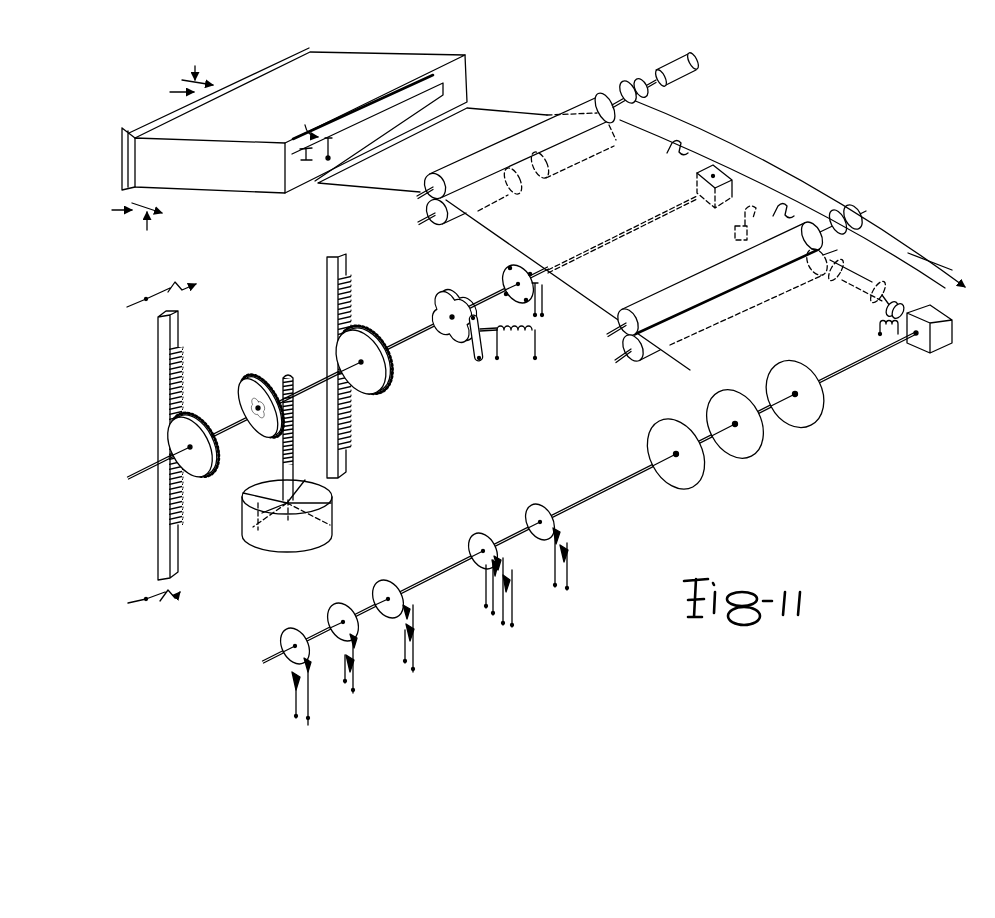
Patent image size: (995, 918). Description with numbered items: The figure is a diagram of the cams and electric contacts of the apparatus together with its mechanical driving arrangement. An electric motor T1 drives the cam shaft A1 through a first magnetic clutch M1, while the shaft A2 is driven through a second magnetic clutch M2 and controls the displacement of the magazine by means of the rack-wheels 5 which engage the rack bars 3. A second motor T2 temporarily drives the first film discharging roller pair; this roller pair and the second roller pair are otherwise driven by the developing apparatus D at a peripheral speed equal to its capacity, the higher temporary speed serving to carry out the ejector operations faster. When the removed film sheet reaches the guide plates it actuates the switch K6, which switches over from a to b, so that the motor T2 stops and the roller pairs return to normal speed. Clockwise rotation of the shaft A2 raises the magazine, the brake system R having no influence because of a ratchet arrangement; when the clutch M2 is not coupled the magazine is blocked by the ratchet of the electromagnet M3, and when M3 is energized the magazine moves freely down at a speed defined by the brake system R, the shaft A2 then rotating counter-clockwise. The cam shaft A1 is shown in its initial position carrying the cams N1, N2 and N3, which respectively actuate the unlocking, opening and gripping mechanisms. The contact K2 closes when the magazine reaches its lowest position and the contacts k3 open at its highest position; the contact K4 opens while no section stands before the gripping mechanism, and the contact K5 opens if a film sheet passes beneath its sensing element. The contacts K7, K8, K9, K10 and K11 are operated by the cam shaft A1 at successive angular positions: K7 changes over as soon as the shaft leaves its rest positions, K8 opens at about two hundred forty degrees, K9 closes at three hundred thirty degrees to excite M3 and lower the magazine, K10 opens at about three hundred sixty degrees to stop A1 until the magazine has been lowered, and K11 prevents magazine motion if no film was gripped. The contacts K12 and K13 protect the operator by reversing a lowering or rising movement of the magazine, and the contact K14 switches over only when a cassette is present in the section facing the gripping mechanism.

The contact K12 is at (199, 73).
The contact K13 is at (146, 222).
The contact K14 is at (331, 145).
The contact K5 is at (668, 155).
The switch K6 is at (776, 212).
The second motor T2 is at (675, 84).
The second magnetic clutch M2 is at (740, 230).
The electric motor T1 is at (850, 292).
The first magnetic clutch M1 is at (882, 338).
The cam shaft A1 is at (865, 362).
The developing apparatus D is at (801, 203).
The contacts k3 is at (162, 286).
The rack bars 3 is at (158, 531).
The rack-wheels 5 is at (218, 460).
The shaft A2 is at (400, 347).
The electromagnet M3 is at (503, 347).
The contact K4 is at (532, 293).
The brake system R is at (287, 475).
The contact K2 is at (154, 613).
The cam N1 is at (684, 487).
The cam N2 is at (743, 459).
The cam N3 is at (812, 428).
The contact K7 is at (292, 688).
The contact K8 is at (342, 680).
The contact K9 is at (403, 650).
The contact K10 is at (488, 592).
The contact K11 is at (550, 558).
The contact position a is at (292, 715).
The contact position b is at (310, 676).